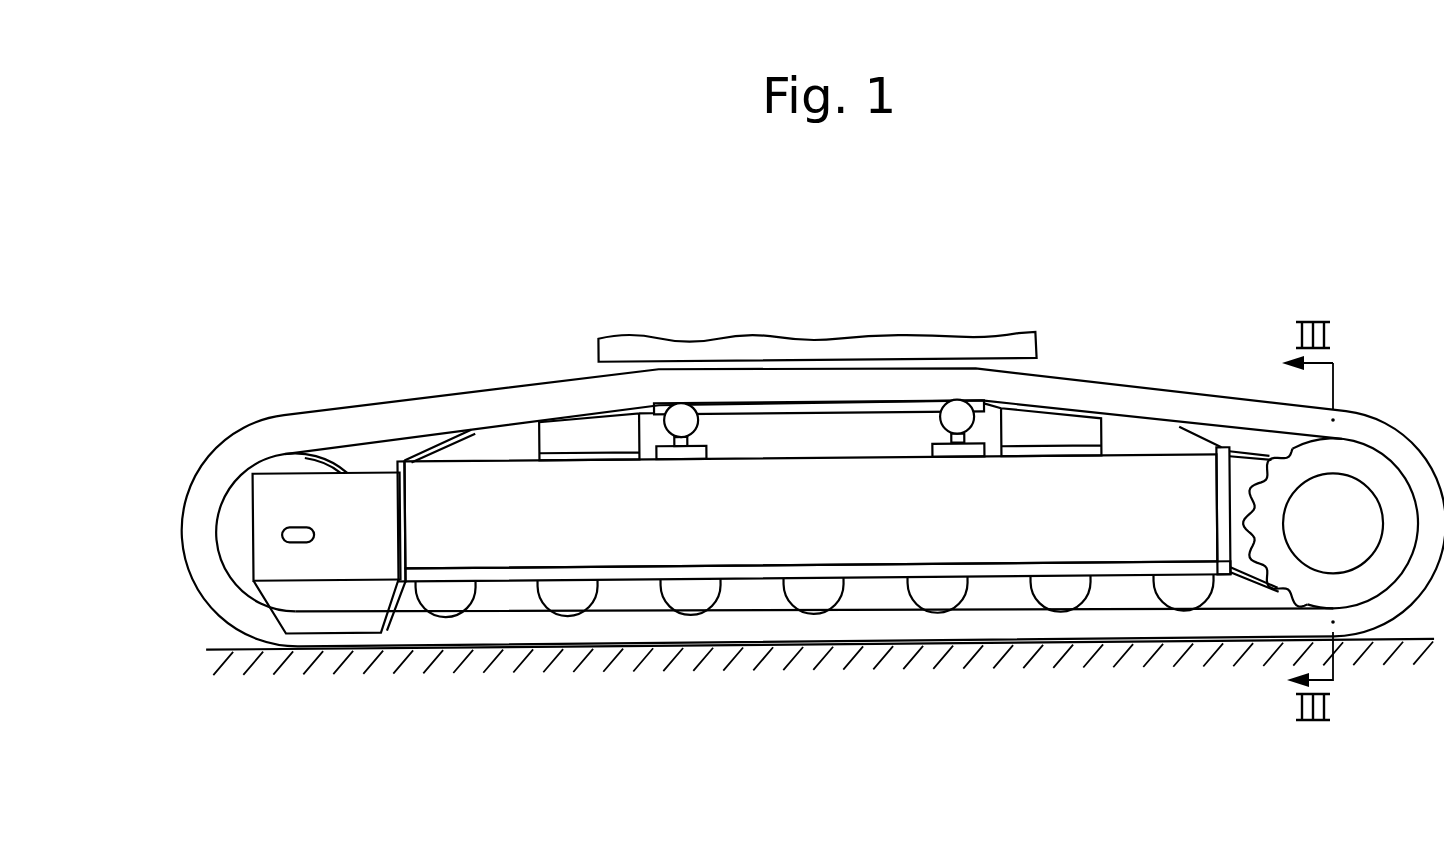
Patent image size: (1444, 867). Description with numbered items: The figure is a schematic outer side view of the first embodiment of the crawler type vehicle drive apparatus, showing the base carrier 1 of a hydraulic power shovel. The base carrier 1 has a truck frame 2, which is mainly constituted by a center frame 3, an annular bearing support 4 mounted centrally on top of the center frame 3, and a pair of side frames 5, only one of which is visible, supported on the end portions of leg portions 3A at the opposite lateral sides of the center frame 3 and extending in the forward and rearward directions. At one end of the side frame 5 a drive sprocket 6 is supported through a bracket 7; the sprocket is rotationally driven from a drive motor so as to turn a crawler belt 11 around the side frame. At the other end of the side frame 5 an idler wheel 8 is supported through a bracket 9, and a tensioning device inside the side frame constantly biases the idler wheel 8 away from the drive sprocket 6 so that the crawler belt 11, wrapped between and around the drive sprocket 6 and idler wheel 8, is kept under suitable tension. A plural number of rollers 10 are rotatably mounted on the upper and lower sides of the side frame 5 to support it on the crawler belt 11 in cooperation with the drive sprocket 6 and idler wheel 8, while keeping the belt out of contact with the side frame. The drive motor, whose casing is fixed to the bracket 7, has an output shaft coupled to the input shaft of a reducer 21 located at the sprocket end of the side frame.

The base carrier 1 is at (615, 308).
The truck frame 2 is at (997, 597).
The center frame 3 is at (824, 438).
The leg portions 3A is at (567, 428).
The annular bearing support 4 is at (897, 358).
The side frame 5 is at (878, 552).
The drive sprocket 6 is at (1338, 462).
The bracket 7 is at (1242, 557).
The idler wheel 8 is at (228, 525).
The bracket 9 is at (375, 490).
The rollers 10 is at (681, 410).
The crawler belt 11 is at (262, 443).
The reducer 21 is at (1355, 548).